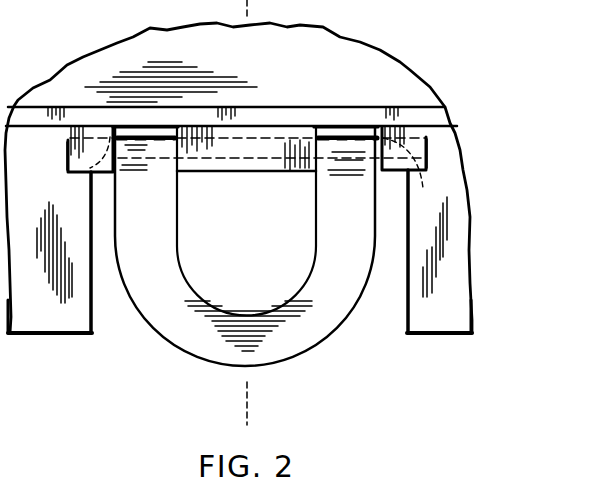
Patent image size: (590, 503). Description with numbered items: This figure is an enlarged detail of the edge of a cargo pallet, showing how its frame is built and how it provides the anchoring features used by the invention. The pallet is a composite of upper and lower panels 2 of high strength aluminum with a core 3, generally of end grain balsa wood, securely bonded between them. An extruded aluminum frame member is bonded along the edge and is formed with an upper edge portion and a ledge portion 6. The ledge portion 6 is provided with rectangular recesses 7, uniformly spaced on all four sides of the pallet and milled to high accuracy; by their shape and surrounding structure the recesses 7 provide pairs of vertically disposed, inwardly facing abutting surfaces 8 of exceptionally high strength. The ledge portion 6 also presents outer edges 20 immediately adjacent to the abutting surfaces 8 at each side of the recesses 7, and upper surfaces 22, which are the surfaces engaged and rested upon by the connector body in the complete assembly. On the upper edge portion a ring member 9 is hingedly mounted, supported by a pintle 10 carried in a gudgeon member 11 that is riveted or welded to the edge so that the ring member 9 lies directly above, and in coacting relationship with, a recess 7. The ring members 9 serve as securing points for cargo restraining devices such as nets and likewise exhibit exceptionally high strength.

The upper and lower panels 2 is at (38, 305).
The core 3 is at (258, 415).
The ledge portion 6 is at (447, 178).
The rectangular recesses 7 is at (358, 343).
The abutting surfaces 8 is at (92, 311).
The ring members 9 is at (182, 355).
The pintles 10 is at (65, 148).
The gudgeon members 11 is at (88, 175).
The outer edges 20 is at (58, 335).
The upper surfaces 22 is at (453, 283).